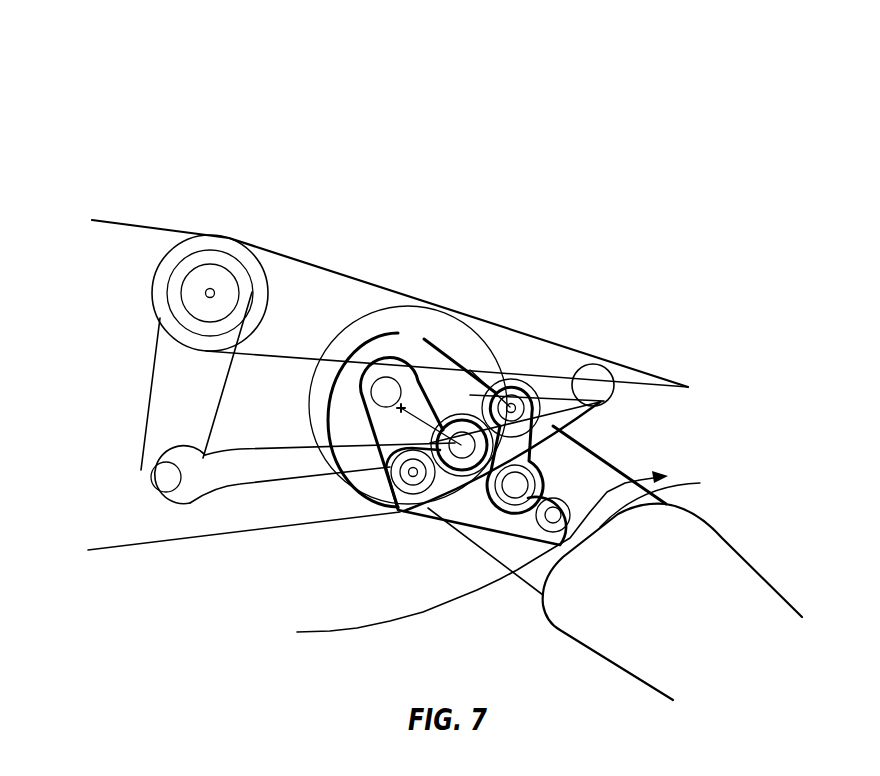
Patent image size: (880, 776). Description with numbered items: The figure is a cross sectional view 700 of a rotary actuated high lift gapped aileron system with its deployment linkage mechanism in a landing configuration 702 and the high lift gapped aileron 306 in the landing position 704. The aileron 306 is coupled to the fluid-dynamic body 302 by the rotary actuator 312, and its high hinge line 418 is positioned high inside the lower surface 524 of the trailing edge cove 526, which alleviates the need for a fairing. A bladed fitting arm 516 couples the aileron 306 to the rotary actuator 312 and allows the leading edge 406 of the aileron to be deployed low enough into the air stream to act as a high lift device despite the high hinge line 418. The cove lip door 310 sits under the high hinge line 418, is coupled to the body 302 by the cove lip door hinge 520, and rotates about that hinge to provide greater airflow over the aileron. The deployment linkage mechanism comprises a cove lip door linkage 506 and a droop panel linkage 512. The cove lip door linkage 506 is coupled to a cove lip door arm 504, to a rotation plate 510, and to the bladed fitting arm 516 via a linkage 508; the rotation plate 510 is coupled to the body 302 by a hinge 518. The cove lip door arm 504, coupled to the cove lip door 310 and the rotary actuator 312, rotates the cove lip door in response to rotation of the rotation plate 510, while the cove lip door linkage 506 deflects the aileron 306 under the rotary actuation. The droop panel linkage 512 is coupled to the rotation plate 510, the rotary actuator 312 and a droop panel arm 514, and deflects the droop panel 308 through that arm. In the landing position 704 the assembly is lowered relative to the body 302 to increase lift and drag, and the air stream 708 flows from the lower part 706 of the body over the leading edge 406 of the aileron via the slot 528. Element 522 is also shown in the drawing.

The cross sectional view 700 is at (703, 35).
The fluid-dynamic body 302 is at (146, 229).
The high lift gapped aileron 306 is at (750, 566).
The droop panel 308 is at (342, 268).
The cove lip door 310 is at (470, 522).
The rotary actuator 312 is at (360, 503).
The leading edge 406 is at (668, 478).
The high hinge line 418 is at (401, 408).
The cove lip door arm 504 is at (373, 411).
The cove lip door linkage 506 is at (437, 424).
The linkage 508 is at (560, 548).
The rotation plate 510 is at (542, 446).
The droop panel linkage 512 is at (237, 475).
The droop panel arm 514 is at (158, 372).
The bladed fitting arm 516 is at (612, 477).
The hinge 518 is at (512, 397).
The cove lip door hinge 520 is at (413, 480).
The pulley 522 is at (212, 288).
The lower surface 524 is at (132, 546).
The trailing edge cove 526 is at (147, 518).
The slot 528 is at (683, 405).
The landing configuration 702 is at (166, 328).
The landing position 704 is at (672, 595).
The lower part 706 is at (244, 614).
The air/fluid stream 708 is at (517, 574).